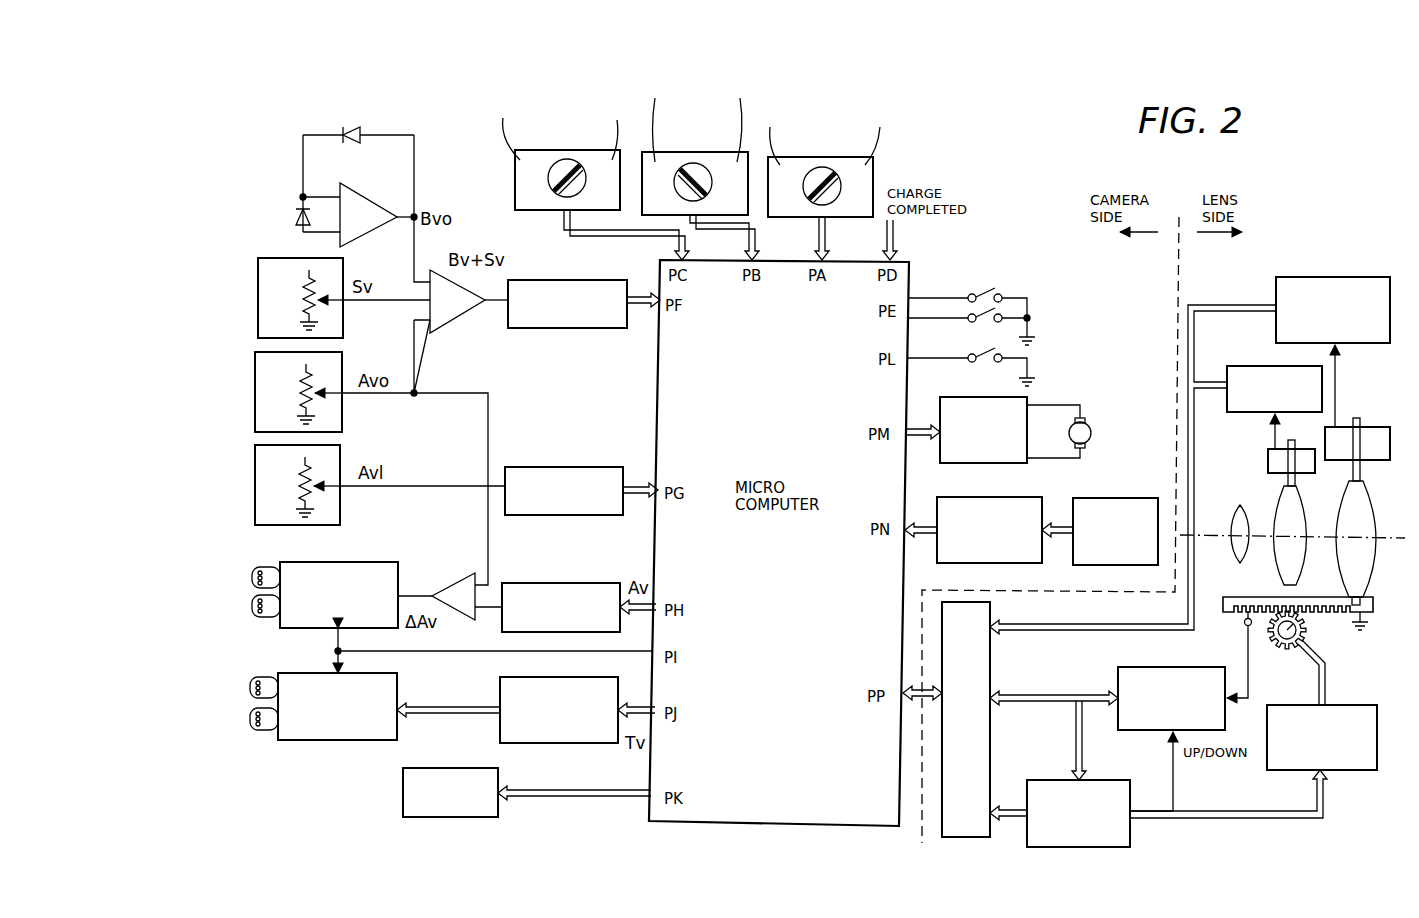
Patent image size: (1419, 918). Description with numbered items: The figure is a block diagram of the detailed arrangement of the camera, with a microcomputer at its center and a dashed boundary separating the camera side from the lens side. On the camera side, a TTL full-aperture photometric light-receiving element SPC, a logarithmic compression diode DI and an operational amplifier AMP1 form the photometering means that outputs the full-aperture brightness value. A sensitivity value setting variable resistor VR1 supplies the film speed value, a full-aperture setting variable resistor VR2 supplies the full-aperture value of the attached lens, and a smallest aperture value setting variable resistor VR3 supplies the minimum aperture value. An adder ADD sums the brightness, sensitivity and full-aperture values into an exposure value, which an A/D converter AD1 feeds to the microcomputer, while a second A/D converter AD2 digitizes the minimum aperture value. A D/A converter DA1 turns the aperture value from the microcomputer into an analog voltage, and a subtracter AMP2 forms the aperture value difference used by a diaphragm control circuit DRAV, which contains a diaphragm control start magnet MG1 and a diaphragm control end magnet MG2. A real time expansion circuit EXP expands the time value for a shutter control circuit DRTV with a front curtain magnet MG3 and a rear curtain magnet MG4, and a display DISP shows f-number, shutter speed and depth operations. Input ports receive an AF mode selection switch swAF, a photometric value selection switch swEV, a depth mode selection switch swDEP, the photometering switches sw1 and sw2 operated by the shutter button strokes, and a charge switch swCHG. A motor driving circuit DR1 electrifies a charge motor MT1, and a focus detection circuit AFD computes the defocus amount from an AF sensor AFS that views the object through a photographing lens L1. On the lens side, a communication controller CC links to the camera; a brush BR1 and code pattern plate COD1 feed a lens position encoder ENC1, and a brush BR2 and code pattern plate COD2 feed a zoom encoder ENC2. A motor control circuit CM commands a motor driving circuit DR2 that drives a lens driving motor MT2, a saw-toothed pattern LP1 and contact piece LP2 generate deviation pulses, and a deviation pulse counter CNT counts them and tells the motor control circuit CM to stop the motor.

The logarithmic compression diode DI is at (358, 149).
The operational amplifier AMP1 is at (377, 203).
The TTL full-aperture photometric light-receiving element SPC is at (295, 213).
The sensitivity value setting variable resistor VR1 is at (344, 298).
The full-aperture setting variable resistor VR2 is at (298, 392).
The smallest aperture value setting variable resistor VR3 is at (380, 485).
The adder ADD is at (448, 333).
The A/D converter AD1 is at (566, 328).
The A/D converter AD2 is at (570, 467).
The subtracter AMP2 is at (445, 573).
The diaphragm control circuit DRAV is at (315, 562).
The diaphragm control start magnet MG1 is at (253, 567).
The diaphragm control end magnet MG2 is at (253, 617).
The front curtain magnet MG3 is at (258, 677).
The rear curtain magnet MG4 is at (251, 730).
The shutter control circuit DRTV is at (310, 740).
The D/A converter DA1 is at (565, 583).
The real time expansion circuit EXP is at (555, 743).
The display DISP is at (440, 817).
The AF mode selection switch swAF is at (584, 181).
The photometric value selection switch swEV is at (693, 171).
The depth mode selection switch swDEP is at (833, 185).
The photometering switch sw1 is at (971, 306).
The photometering switch sw2 is at (967, 327).
The charge switch swCHG is at (971, 367).
The motor driving circuit DR1 is at (975, 463).
The charge motor MT1 is at (1091, 433).
The focus detection circuit AFD is at (975, 563).
The AF sensor AFS is at (1105, 565).
The lens position encoder ENC1 is at (1310, 277).
The zoom encoder ENC2 is at (1268, 366).
The brush BR1 is at (1352, 418).
The brush BR2 is at (1287, 483).
The code pattern plate COD1 is at (1385, 427).
The code pattern plate COD2 is at (1268, 452).
The photographing lens L1 is at (1373, 510).
The saw-toothed pattern LP1 is at (1376, 608).
The contact piece LP2 is at (1244, 625).
The lens driving motor MT2 is at (1277, 647).
The deviation pulse counter CNT is at (1138, 667).
The motor control circuit CM is at (1107, 768).
The communication controller CC is at (991, 752).
The motor driving circuit DR2 is at (1355, 770).